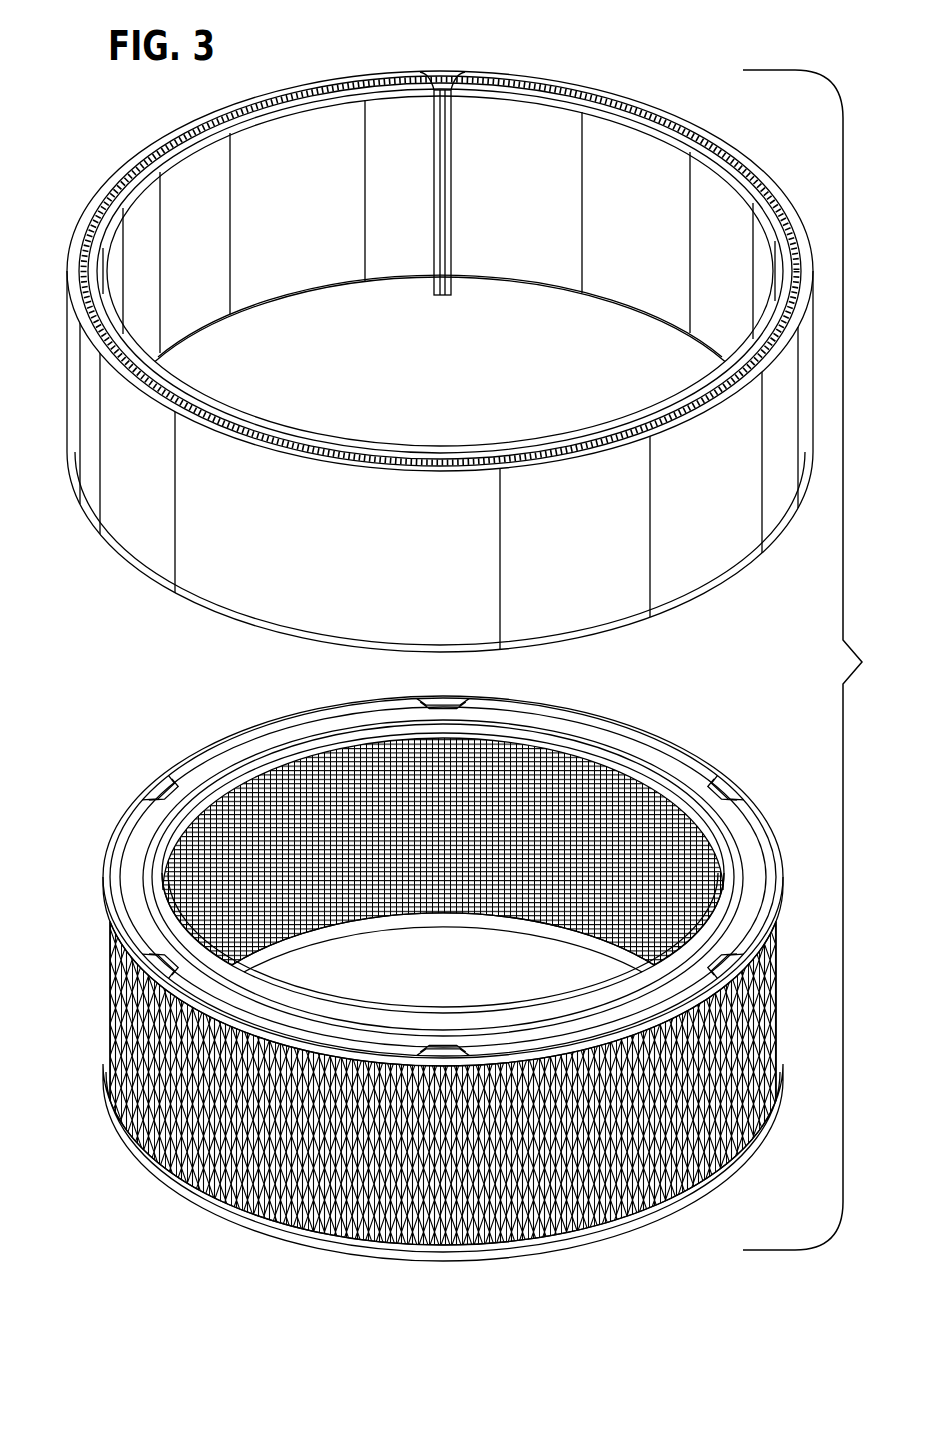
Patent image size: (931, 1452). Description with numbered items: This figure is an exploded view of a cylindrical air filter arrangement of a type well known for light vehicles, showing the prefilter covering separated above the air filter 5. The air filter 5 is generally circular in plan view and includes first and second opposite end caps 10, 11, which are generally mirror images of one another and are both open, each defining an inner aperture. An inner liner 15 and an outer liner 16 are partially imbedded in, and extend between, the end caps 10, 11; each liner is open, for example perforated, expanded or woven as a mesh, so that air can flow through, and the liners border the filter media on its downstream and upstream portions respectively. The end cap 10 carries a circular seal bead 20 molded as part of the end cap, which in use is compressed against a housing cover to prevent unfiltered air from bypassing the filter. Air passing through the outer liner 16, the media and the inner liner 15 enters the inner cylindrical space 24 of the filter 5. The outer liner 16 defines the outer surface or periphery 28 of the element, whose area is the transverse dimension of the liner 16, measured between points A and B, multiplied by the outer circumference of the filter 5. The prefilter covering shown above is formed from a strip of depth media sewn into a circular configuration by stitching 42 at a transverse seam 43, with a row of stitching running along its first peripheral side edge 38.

The air filter 5 is at (748, 848).
The first end cap 10 is at (672, 765).
The second end cap 11 is at (343, 928).
The inner liner 15 is at (237, 838).
The outer liner 16 is at (206, 1128).
The seal bead 20 is at (568, 741).
The inner cylindrical space 24 is at (462, 920).
The outer surface 28 is at (733, 1078).
The first peripheral side edge 38 is at (122, 178).
The stitching 42 is at (440, 223).
The transverse seam 43 is at (448, 113).
The point A is at (103, 889).
The point B is at (104, 1075).